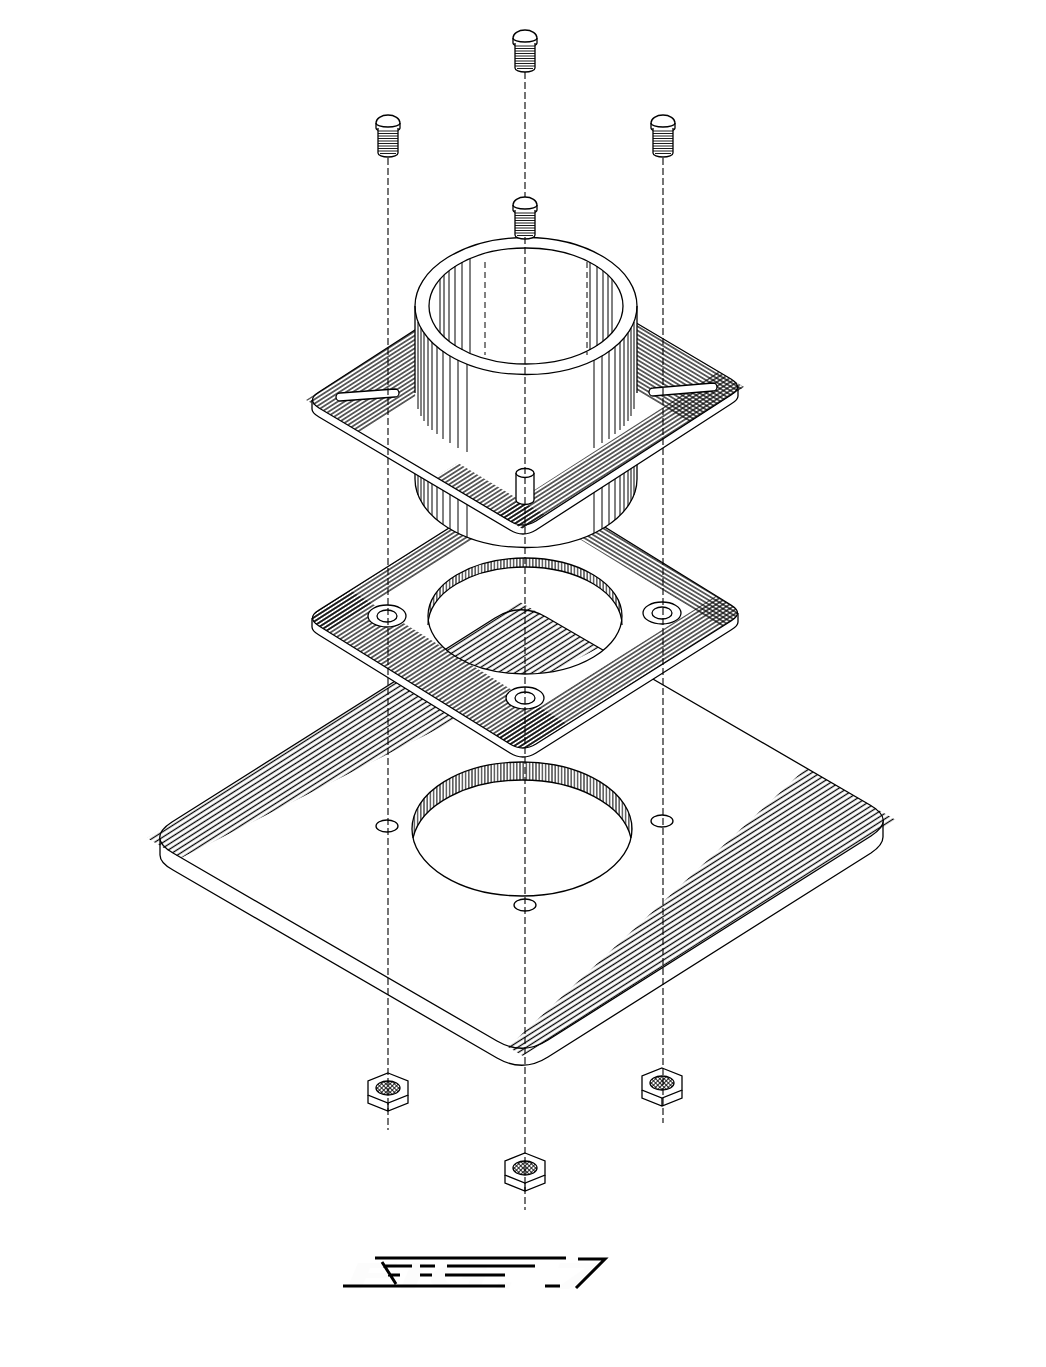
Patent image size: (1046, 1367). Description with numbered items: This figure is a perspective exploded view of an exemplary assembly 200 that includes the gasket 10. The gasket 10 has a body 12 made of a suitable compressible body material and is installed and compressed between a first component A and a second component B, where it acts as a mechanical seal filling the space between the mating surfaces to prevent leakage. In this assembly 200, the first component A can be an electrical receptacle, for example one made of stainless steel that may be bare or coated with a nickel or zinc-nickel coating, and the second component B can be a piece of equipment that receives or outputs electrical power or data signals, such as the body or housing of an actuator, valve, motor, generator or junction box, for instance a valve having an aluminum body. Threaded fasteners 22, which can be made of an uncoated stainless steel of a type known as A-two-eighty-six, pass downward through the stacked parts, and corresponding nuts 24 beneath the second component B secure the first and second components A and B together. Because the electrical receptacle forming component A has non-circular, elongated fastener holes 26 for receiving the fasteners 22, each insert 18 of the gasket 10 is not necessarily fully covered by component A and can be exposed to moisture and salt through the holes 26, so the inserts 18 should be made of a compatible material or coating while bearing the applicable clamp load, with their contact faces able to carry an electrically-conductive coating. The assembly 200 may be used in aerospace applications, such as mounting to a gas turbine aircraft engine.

The assembly 200 is at (467, 608).
The gasket 10 is at (487, 497).
The body 12 is at (551, 618).
The insert 18 is at (370, 613).
The threaded fasteners 22 is at (513, 53).
The nuts 24 is at (690, 1081).
The fastener holes 26 is at (367, 395).
The first component A is at (522, 392).
The second component B is at (170, 823).